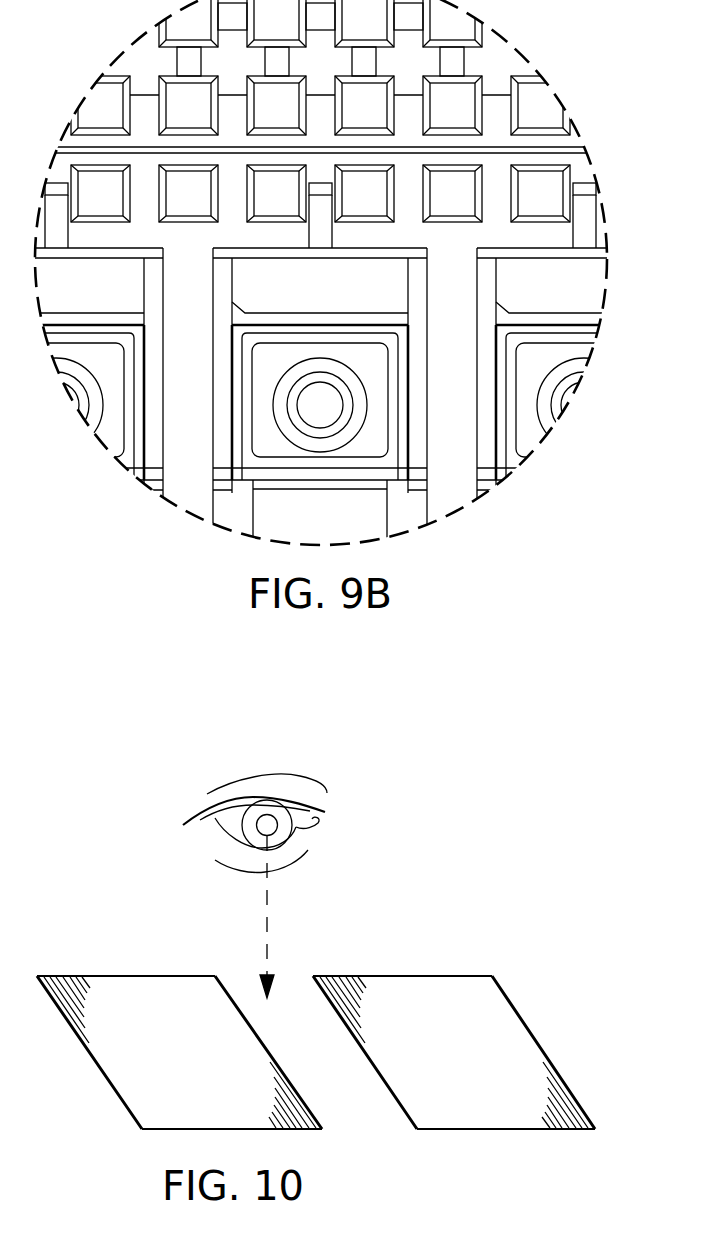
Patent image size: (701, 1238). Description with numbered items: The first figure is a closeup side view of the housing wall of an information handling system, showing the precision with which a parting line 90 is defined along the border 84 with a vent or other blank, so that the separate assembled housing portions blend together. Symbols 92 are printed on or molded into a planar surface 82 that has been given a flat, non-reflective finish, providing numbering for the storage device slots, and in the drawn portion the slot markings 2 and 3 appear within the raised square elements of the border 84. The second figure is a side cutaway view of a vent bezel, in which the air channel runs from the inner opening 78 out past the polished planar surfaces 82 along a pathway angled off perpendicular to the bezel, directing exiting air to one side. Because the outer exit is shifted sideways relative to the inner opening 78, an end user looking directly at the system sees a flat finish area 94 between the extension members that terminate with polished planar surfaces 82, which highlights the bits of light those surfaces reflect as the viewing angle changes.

In FIG. 9B, the parting line 90 is at (118, 147).
In FIG. 9B, the border 84 is at (145, 224).
In FIG. 9B, the symbol 92 is at (276, 235).
In FIG. 10, the symbol 92 is at (268, 920).
In FIG. 9B, the pixel index 2 is at (276, 193).
In FIG. 9B, the pixel index 3 is at (540, 193).
In FIG. 10, the polished planar surface 82 is at (316, 1024).
In FIG. 10, the flat finish area 94 is at (270, 1053).
In FIG. 10, the opening 78 is at (380, 1127).